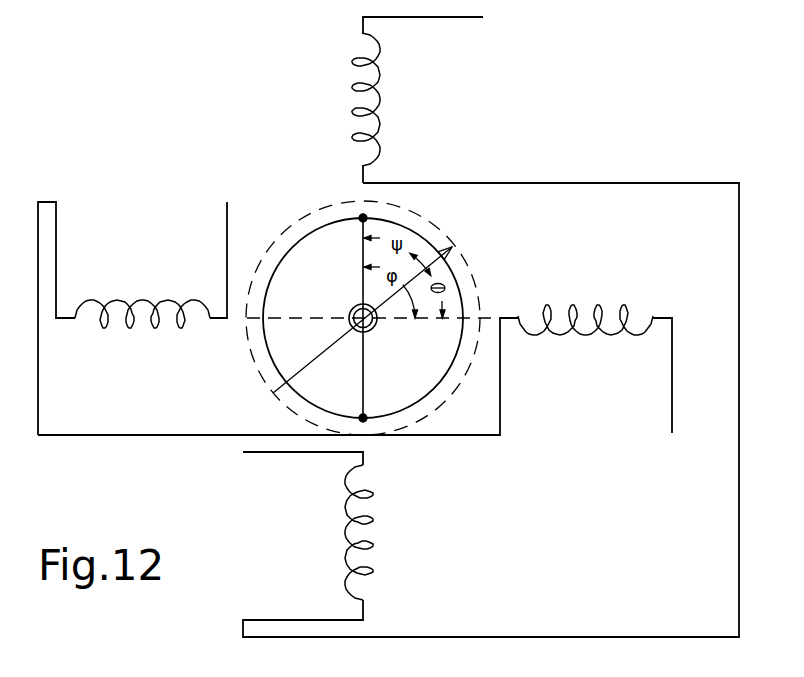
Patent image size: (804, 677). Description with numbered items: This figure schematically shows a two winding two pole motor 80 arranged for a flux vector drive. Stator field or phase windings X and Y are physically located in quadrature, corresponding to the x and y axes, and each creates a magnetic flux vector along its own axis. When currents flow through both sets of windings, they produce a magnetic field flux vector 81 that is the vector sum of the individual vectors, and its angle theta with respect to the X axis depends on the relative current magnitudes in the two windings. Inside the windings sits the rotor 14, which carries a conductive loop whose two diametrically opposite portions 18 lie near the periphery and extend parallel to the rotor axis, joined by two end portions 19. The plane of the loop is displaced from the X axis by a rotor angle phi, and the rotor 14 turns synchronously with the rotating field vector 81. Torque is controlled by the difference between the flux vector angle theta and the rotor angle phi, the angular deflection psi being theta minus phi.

The rotor 14 is at (274, 360).
The diametrically opposite portions 18 is at (363, 216).
The end portions 19 is at (363, 288).
The two winding two pole motor 80 is at (474, 172).
The magnetic field flux vector 81 is at (302, 370).